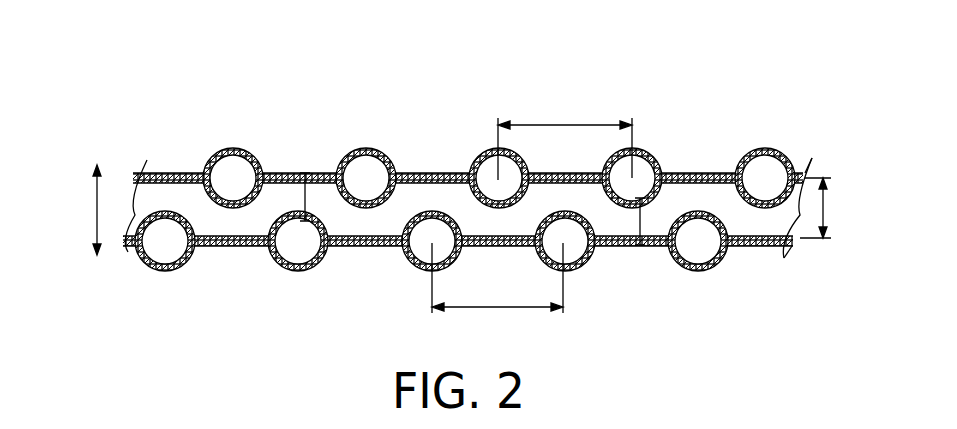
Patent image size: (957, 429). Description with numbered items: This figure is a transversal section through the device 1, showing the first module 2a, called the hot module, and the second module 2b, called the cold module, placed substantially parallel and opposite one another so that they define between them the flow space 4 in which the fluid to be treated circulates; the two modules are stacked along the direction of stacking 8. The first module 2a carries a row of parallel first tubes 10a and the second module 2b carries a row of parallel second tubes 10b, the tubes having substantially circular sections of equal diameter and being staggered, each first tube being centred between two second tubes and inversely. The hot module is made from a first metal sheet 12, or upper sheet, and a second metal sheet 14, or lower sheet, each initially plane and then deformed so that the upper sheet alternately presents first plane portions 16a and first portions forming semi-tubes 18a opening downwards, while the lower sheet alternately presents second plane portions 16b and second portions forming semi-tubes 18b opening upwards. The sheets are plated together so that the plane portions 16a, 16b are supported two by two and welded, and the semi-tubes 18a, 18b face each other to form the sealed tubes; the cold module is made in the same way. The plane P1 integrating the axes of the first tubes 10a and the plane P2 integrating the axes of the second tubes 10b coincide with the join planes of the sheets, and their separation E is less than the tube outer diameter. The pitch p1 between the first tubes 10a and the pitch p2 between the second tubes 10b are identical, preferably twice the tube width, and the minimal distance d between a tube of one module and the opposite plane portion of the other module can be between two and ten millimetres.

The device 1 is at (248, 120).
The first module 2a is at (129, 176).
The second module 2b is at (119, 242).
The flow space 4 is at (735, 215).
The direction of stacking 8 is at (95, 209).
The first tubes 10a is at (363, 172).
The second tubes 10b is at (300, 250).
The first metal sheet 12 is at (187, 171).
The second metal sheet 14 is at (293, 187).
The first plane portions 16a is at (300, 175).
The second plane portions 16b is at (386, 248).
The first portions forming semi-tubes 18a is at (210, 150).
The second portions forming semi-tubes 18b is at (278, 262).
The plane integrating the axes of the first tubes P1 is at (812, 165).
The plane integrating the axes of the second tubes P2 is at (808, 245).
The distance between planes P1 and P2 E is at (819, 208).
The minimal distance d is at (479, 209).
The pitch between the first tubes p1 is at (565, 138).
The pitch between the second tubes p2 is at (497, 289).